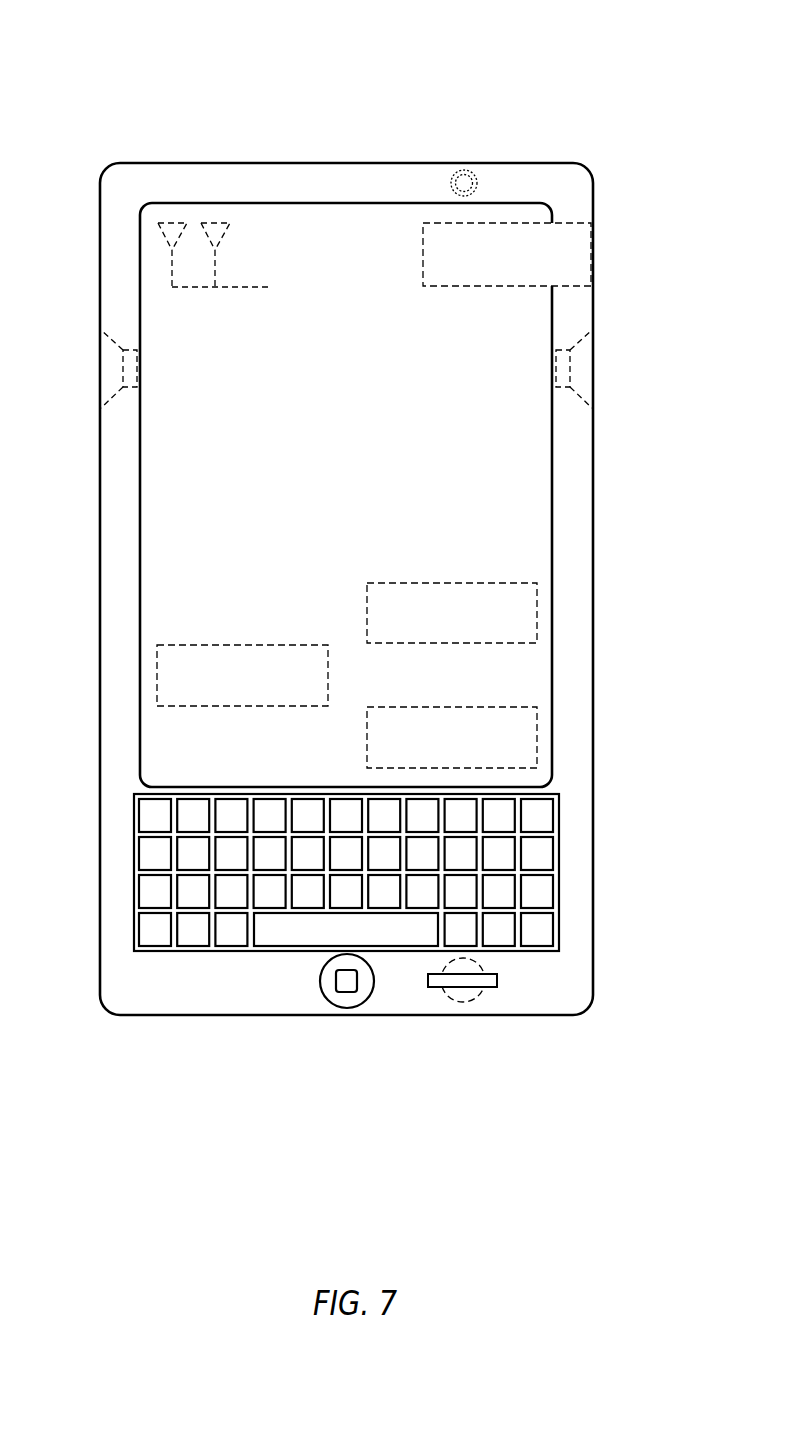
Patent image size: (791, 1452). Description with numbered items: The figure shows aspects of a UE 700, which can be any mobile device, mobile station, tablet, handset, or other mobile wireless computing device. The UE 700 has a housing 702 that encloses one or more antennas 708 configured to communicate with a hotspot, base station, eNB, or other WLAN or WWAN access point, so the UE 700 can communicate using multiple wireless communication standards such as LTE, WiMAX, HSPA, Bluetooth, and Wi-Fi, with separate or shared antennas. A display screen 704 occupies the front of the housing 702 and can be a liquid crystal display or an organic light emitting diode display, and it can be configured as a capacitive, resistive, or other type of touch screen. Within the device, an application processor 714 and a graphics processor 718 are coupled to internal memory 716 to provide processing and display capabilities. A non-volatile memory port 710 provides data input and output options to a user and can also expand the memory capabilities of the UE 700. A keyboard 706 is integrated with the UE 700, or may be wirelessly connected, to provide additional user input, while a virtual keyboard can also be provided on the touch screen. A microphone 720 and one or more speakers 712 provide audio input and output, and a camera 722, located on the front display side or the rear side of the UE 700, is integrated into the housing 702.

The UE 700 is at (585, 92).
The housing 702 is at (346, 163).
The display screen 704 is at (530, 483).
The keyboard 706 is at (557, 872).
The antennas 708 is at (217, 222).
The non-volatile memory port 710 is at (593, 255).
The speakers 712 is at (110, 368).
The application processor 714 is at (452, 583).
The internal memory 716 is at (452, 707).
The graphics processor 718 is at (240, 645).
The microphone 720 is at (463, 1002).
The camera 722 is at (472, 171).